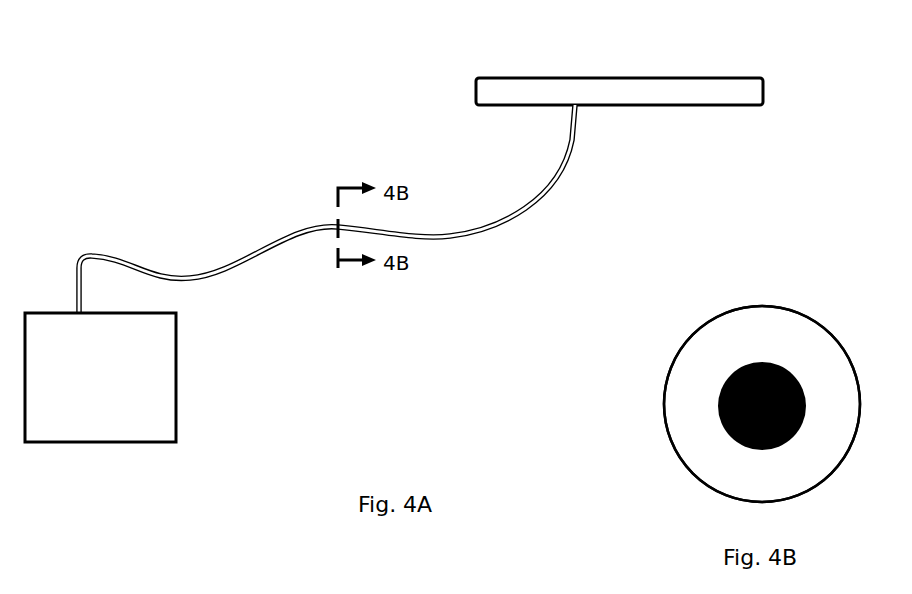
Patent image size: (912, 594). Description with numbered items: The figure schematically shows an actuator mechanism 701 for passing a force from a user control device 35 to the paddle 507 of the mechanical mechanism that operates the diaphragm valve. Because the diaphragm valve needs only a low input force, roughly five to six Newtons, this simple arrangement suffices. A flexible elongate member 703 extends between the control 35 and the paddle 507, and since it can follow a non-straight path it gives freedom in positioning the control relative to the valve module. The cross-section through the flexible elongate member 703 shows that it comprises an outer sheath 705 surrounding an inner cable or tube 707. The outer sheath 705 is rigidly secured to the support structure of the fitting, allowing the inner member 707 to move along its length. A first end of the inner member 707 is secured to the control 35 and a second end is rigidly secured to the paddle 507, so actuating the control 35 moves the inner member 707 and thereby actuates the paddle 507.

In FIG. 4A, the actuator mechanism 701 is at (260, 126).
In FIG. 4A, the user control device 35 is at (538, 88).
In FIG. 4A, the flexible elongate member 703 is at (260, 247).
In FIG. 4B, the flexible elongate member 703 is at (684, 282).
In FIG. 4A, the paddle 507 is at (167, 419).
In FIG. 4B, the outer sheath 705 is at (787, 312).
In FIG. 4B, the inner cable or tube 707 is at (718, 400).